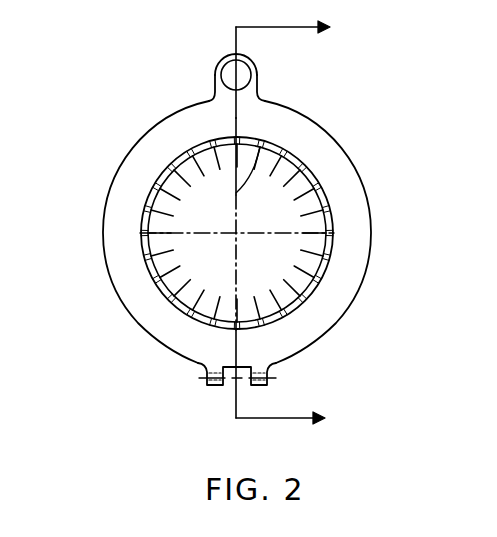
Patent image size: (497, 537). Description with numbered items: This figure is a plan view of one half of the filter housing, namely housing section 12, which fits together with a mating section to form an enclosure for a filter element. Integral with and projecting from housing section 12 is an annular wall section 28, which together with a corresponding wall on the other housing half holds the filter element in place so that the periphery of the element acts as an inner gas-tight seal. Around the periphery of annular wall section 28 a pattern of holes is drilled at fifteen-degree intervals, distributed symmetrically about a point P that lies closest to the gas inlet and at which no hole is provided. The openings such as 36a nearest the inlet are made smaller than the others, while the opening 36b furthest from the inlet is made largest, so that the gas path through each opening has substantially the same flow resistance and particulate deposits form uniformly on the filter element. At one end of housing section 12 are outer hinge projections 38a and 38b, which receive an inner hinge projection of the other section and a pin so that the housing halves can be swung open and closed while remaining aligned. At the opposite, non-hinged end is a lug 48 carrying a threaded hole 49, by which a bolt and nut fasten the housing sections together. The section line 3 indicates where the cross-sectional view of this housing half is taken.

The section line 3 is at (293, 224).
The second housing section 12 is at (335, 141).
The second annular wall section 28 is at (158, 292).
The opening 36a is at (213, 146).
The opening 36b is at (264, 320).
The outer hinge projection 38a is at (268, 380).
The outer hinge projection 38b is at (206, 381).
The lug 48 is at (257, 100).
The threaded hole 49 is at (222, 61).
The point P is at (236, 118).